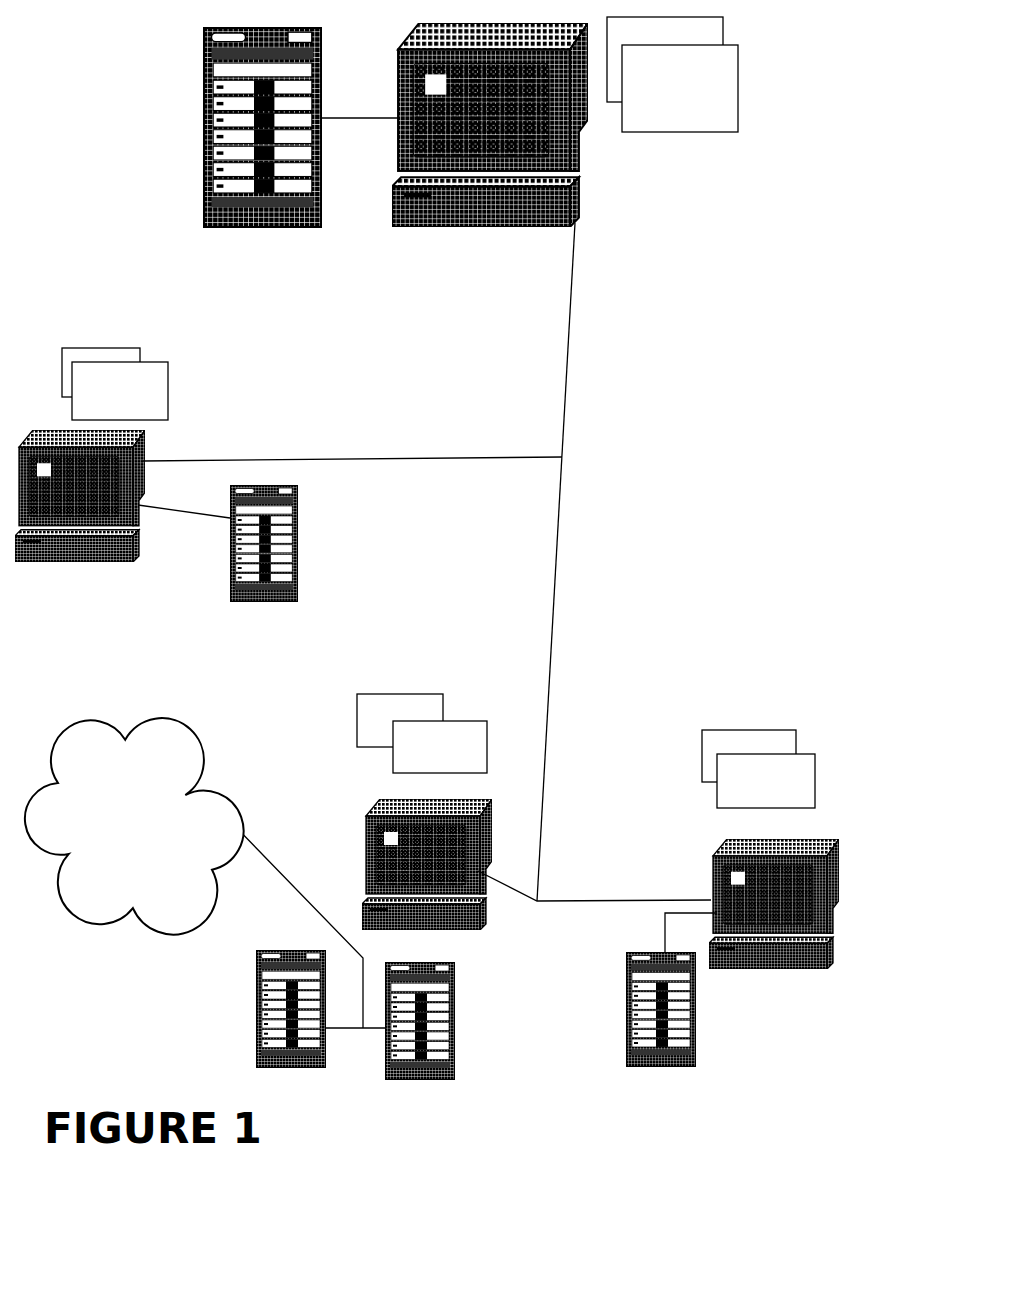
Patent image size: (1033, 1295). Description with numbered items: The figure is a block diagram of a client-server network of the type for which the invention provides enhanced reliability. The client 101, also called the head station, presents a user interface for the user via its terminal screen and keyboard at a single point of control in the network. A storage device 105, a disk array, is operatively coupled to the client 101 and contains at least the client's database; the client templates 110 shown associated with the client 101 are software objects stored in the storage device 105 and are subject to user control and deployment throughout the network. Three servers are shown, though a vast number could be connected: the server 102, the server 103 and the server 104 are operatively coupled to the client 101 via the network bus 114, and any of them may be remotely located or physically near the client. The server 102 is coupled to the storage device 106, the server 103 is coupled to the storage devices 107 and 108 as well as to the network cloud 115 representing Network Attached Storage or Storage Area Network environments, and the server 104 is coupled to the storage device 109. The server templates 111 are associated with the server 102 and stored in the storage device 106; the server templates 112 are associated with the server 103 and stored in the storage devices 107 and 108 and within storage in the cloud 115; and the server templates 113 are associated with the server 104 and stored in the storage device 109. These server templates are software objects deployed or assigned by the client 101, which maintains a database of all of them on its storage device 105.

The client 101 is at (397, 200).
The server 102 is at (44, 432).
The server 103 is at (478, 933).
The server 104 is at (828, 963).
The storage device 105 is at (203, 162).
The storage device 106 is at (298, 583).
The storage device 107 is at (320, 1070).
The storage device 108 is at (452, 992).
The storage device 109 is at (691, 1065).
The client templates 110 is at (678, 132).
The server templates 111 is at (168, 390).
The server templates 112 is at (355, 722).
The server templates 113 is at (750, 730).
The network bus 114 is at (566, 512).
The network cloud 115 is at (101, 928).